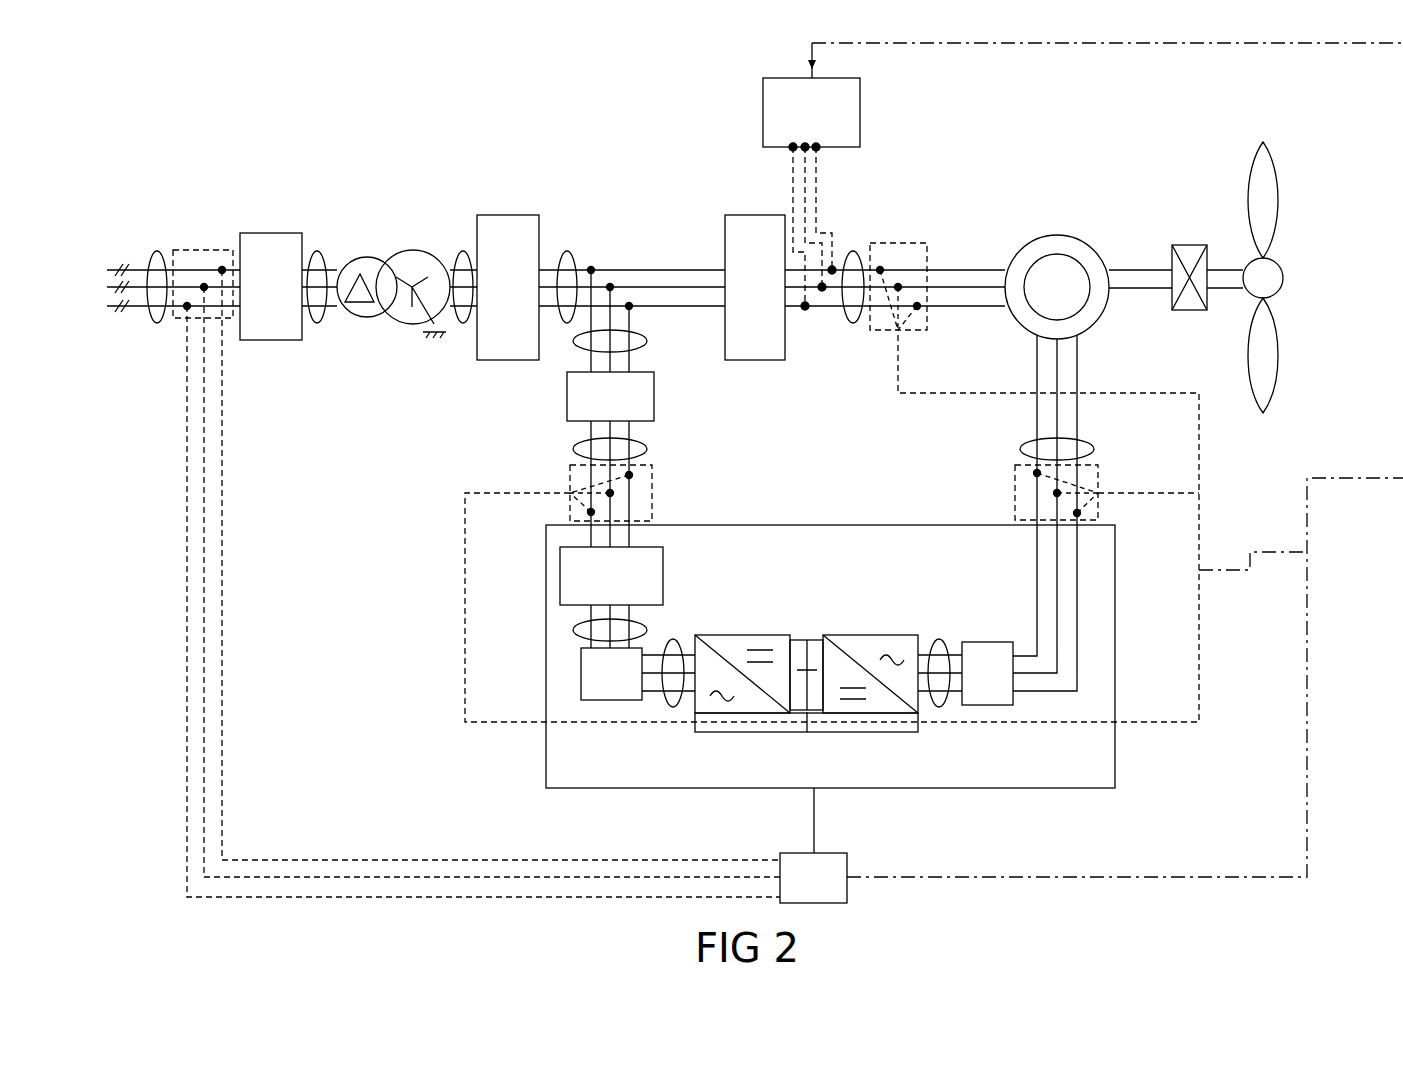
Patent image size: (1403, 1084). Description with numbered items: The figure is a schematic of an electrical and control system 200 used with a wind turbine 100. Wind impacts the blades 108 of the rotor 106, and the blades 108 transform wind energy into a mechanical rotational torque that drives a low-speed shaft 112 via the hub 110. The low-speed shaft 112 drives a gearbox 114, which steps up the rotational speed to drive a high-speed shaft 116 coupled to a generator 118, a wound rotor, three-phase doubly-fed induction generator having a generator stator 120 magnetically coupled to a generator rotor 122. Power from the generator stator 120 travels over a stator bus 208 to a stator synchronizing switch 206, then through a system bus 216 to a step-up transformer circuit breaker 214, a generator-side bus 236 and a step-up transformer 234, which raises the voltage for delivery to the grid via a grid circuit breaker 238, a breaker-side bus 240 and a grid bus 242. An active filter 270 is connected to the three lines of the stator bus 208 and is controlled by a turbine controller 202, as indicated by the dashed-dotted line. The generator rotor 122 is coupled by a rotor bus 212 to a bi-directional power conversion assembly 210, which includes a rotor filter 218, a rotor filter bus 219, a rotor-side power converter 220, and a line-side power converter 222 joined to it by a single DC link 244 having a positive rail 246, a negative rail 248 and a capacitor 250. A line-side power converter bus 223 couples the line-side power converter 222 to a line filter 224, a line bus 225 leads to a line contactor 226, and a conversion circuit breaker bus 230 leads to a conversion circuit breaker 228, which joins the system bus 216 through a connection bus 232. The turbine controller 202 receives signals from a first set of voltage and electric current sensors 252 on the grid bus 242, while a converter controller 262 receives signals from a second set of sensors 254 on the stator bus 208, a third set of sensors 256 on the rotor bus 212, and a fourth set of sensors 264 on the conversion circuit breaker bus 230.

The wind turbine 100 is at (1308, 244).
The rotor 106 is at (1308, 277).
The blades 108 is at (1278, 205).
The hub 110 is at (1284, 278).
The low-speed shaft 112 is at (1220, 270).
The gearbox 114 is at (1186, 245).
The high-speed shaft 116 is at (1140, 270).
The generator 118 is at (1059, 219).
The generator stator 120 is at (1061, 236).
The generator rotor 122 is at (1038, 268).
The electrical and control system 200 is at (212, 106).
The turbine controller 202 is at (813, 845).
The stator synchronizing switch 206 is at (762, 215).
The stator bus 208 is at (858, 252).
The power conversion assembly 210 is at (1115, 653).
The rotor bus 212 is at (1094, 450).
The step-up transformer circuit breaker 214 is at (514, 215).
The system bus 216 is at (572, 252).
The rotor filter 218 is at (985, 646).
The rotor filter bus 219 is at (940, 640).
The rotor-side power converter 220 is at (918, 713).
The line-side power converter 222 is at (695, 714).
The line-side power converter bus 223 is at (684, 645).
The line filter 224 is at (581, 680).
The line bus 225 is at (573, 630).
The line contactor 226 is at (560, 576).
The conversion circuit breaker 228 is at (654, 386).
The conversion circuit breaker bus 230 is at (647, 449).
The connection bus 232 is at (647, 341).
The step-up transformer 234 is at (410, 250).
The generator-side bus 236 is at (461, 248).
The grid circuit breaker 238 is at (260, 233).
The breaker-side bus 240 is at (320, 252).
The grid bus 242 is at (160, 252).
The DC link 244 is at (807, 656).
The positive rail 246 is at (818, 640).
The negative rail 248 is at (823, 713).
The capacitor 250 is at (806, 669).
The first set of voltage and electric current sensors 252 is at (176, 340).
The second set of voltage and electric current sensors 254 is at (916, 241).
The third set of voltage and electric current sensors 256 is at (1000, 494).
The converter controller 262 is at (872, 722).
The fourth set of voltage and electric current sensors 264 is at (652, 494).
The active filter 270 is at (860, 102).